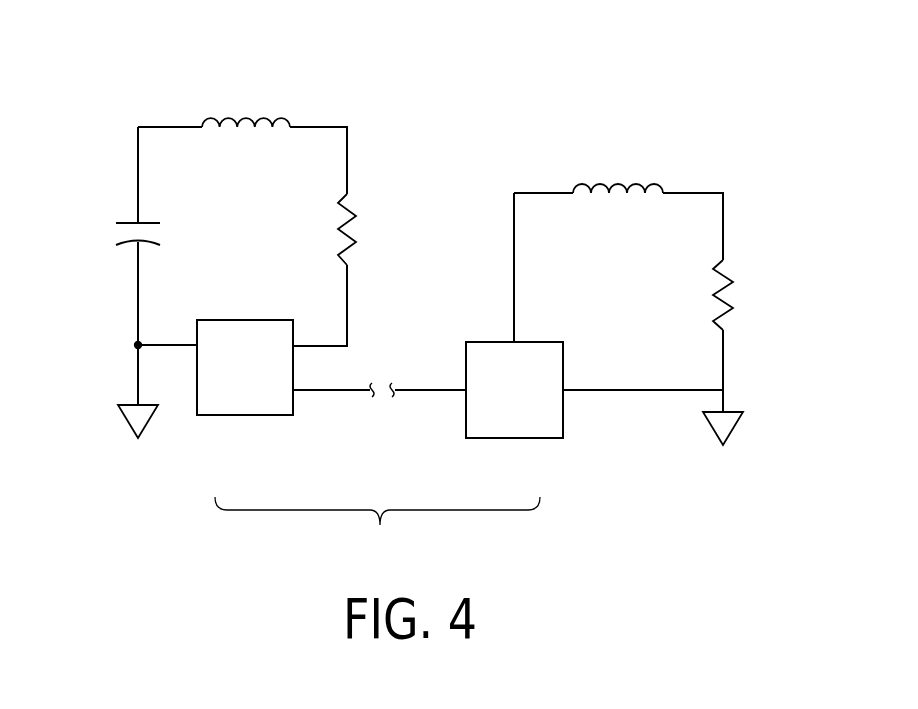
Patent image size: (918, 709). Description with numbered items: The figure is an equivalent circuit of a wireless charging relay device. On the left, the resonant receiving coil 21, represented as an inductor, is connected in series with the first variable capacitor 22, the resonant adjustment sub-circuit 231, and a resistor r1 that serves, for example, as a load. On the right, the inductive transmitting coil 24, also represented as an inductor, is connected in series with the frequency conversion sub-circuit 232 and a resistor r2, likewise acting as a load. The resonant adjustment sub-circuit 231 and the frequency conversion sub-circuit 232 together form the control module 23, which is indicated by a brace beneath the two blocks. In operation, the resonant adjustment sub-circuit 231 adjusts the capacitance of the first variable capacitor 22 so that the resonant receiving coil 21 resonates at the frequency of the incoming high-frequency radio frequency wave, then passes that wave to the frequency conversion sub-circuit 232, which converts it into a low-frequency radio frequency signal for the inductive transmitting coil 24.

The resonant receiving coil 21 is at (248, 115).
The first variable capacitor 22 is at (112, 232).
The resistor r1 is at (357, 232).
The resonant adjustment sub-circuit 231 is at (240, 417).
The frequency conversion sub-circuit 232 is at (513, 438).
The control module 23 is at (377, 529).
The inductive transmitting coil 24 is at (619, 178).
The resistor r2 is at (732, 300).